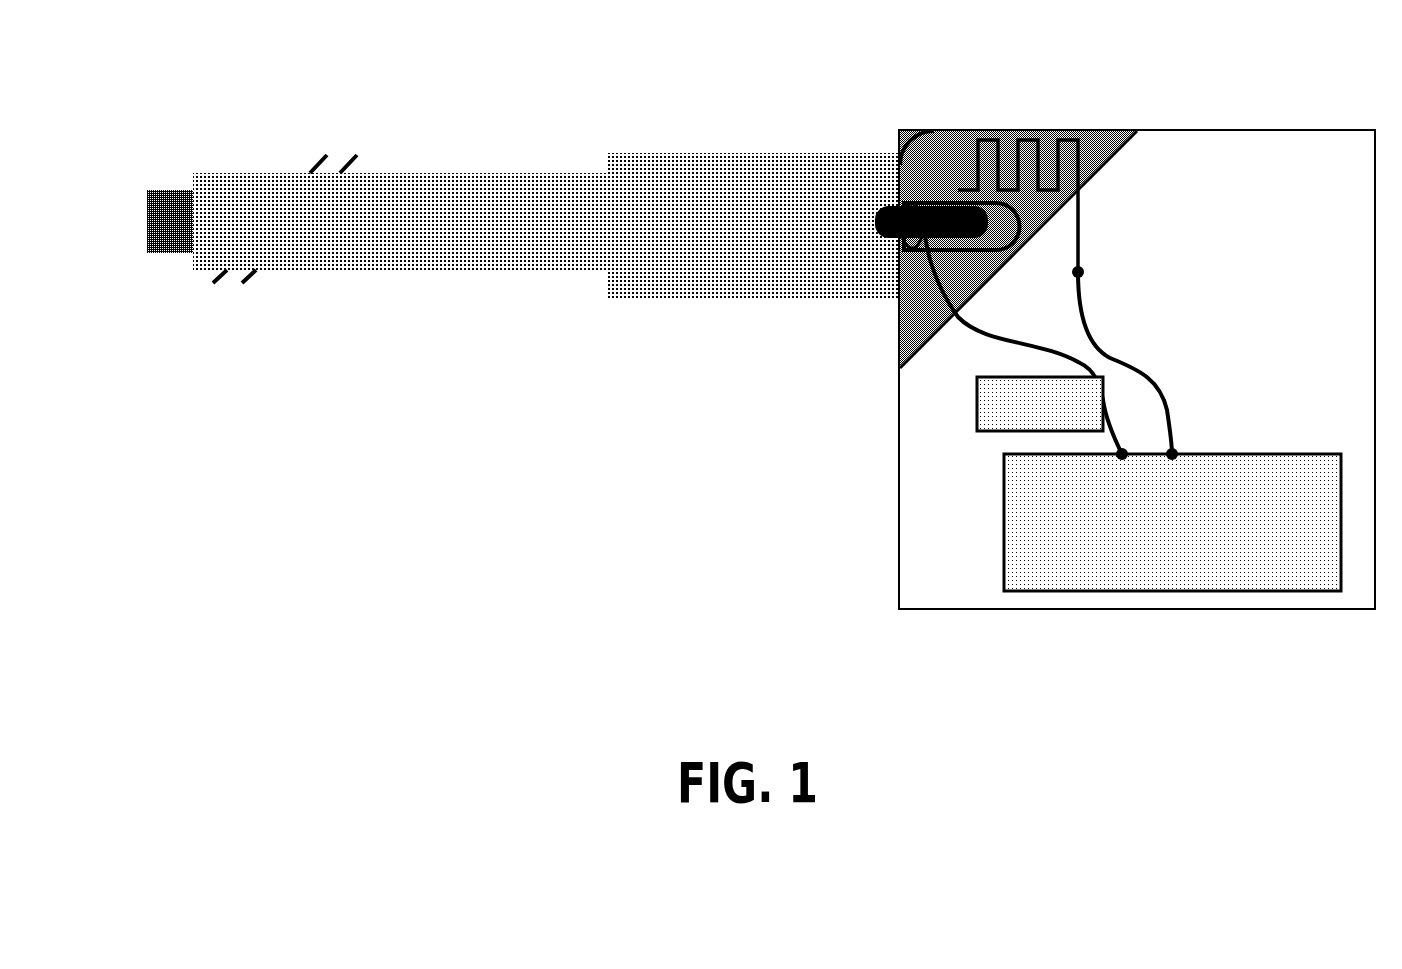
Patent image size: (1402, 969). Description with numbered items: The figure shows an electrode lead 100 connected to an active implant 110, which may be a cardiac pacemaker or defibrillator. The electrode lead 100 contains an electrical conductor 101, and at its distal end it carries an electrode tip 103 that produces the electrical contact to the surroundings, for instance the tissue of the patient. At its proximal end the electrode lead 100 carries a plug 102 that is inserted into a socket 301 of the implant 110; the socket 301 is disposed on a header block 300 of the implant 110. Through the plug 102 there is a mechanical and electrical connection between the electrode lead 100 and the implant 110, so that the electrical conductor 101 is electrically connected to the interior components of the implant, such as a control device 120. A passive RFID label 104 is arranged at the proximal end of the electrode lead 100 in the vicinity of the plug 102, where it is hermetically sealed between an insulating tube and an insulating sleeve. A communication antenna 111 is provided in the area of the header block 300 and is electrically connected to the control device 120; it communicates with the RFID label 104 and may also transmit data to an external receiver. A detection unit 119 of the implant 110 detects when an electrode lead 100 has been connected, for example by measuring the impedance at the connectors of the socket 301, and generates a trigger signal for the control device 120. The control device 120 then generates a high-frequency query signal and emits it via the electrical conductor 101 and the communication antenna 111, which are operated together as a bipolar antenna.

The electrode lead 100 is at (425, 388).
The electrical conductor 101 is at (383, 240).
The plug 102 is at (925, 215).
The electrode tip 103 is at (173, 250).
The passive RFID label 104 is at (808, 196).
The active implant 110 is at (1137, 612).
The communication antenna 111 is at (1027, 133).
The detection unit 119 is at (1040, 404).
The control device 120 is at (1172, 519).
The header block 300 is at (899, 300).
The socket 301 is at (956, 250).